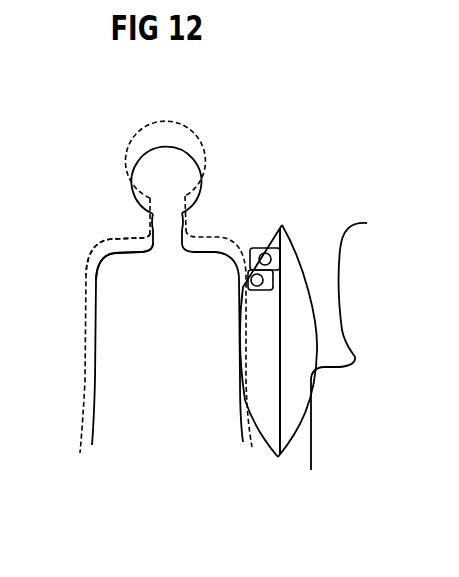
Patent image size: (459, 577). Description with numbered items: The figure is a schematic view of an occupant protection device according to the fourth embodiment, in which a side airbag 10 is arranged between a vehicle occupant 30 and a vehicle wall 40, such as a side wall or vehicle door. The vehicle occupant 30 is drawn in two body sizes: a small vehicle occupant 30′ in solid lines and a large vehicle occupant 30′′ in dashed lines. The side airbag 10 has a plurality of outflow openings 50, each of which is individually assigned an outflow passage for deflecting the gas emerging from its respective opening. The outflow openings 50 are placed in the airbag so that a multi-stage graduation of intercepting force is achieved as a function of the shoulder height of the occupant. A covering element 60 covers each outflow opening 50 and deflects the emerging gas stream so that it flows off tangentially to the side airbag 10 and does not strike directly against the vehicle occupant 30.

The side airbag 10 is at (287, 447).
The vehicle occupant 30 is at (110, 186).
The small vehicle occupant 30′ is at (98, 267).
The large vehicle occupant 30′′ is at (93, 257).
The vehicle wall 40 is at (342, 290).
The outflow opening 50 is at (277, 257).
The covering element 60 is at (250, 270).